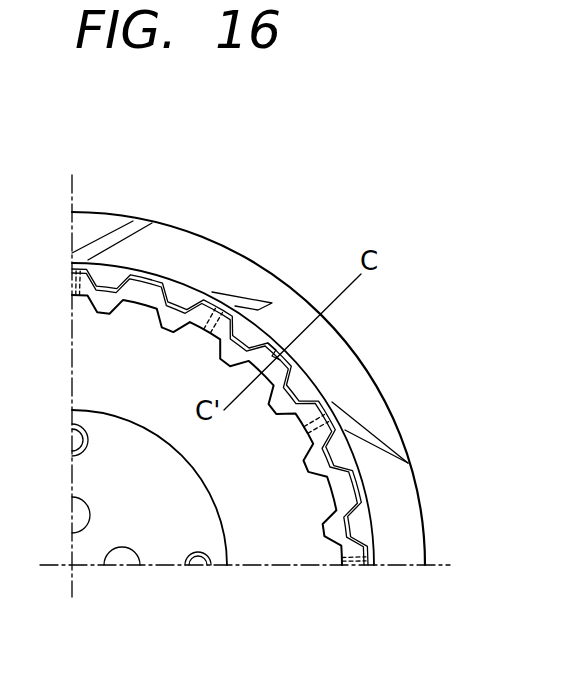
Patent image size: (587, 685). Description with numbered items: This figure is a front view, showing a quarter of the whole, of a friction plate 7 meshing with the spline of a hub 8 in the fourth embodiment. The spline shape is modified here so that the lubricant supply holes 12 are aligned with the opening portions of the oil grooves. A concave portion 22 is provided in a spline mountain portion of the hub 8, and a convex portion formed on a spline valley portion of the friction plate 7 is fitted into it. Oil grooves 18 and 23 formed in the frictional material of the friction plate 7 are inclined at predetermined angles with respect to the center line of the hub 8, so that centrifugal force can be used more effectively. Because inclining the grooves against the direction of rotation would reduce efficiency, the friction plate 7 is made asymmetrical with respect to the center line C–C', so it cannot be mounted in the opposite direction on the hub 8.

The friction plate 7 is at (166, 206).
The hub 8 is at (298, 542).
The lubricant supply holes 12 is at (343, 448).
The oil groove 18 is at (270, 297).
The concave portion 22 is at (279, 353).
The oil groove 23 is at (374, 434).